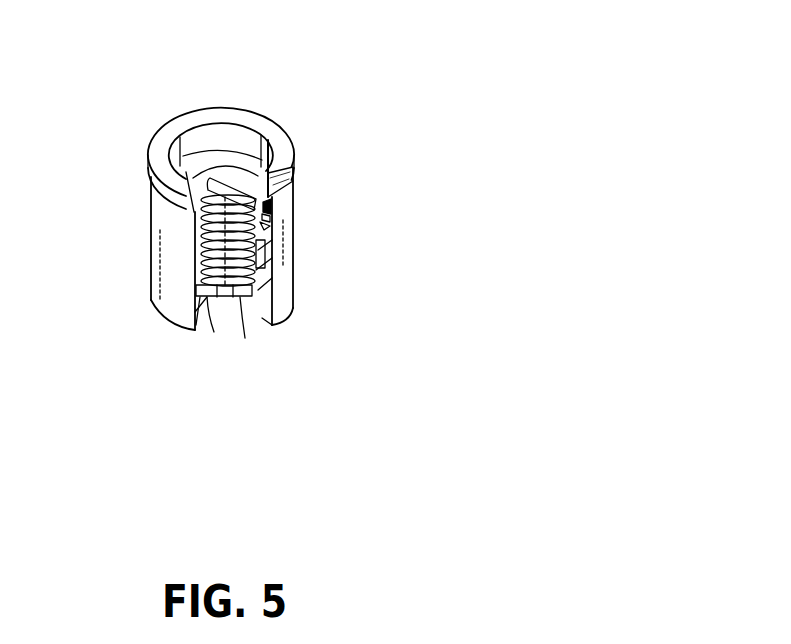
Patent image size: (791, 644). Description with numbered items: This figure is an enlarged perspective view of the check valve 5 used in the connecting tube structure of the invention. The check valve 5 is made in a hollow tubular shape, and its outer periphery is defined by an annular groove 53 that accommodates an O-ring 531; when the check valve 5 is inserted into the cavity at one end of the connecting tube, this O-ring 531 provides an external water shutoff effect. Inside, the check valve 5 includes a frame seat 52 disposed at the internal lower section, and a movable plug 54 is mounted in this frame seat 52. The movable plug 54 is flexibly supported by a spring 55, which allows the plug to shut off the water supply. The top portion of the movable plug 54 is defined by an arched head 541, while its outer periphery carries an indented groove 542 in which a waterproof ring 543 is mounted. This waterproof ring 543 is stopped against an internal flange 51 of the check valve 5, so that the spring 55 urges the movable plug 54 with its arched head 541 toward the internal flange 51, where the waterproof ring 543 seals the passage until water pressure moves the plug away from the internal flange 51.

The check valve 5 is at (302, 333).
The internal flange 51 is at (268, 208).
The frame seat 52 is at (211, 298).
The annular groove 53 is at (293, 172).
The O-ring 531 is at (293, 196).
The movable plug 54 is at (200, 253).
The arched head 541 is at (212, 178).
The indented groove 542 is at (266, 217).
The waterproof ring 543 is at (264, 223).
The spring 55 is at (240, 300).